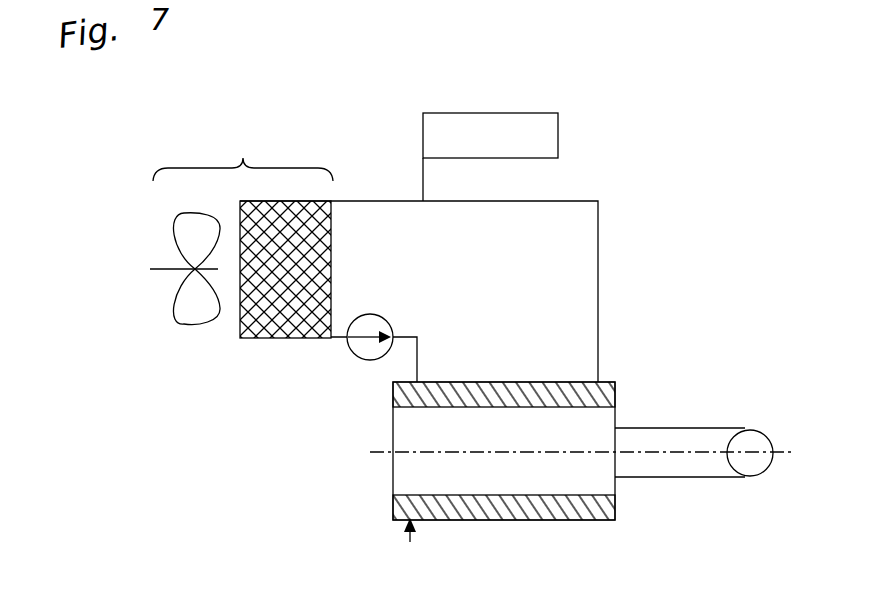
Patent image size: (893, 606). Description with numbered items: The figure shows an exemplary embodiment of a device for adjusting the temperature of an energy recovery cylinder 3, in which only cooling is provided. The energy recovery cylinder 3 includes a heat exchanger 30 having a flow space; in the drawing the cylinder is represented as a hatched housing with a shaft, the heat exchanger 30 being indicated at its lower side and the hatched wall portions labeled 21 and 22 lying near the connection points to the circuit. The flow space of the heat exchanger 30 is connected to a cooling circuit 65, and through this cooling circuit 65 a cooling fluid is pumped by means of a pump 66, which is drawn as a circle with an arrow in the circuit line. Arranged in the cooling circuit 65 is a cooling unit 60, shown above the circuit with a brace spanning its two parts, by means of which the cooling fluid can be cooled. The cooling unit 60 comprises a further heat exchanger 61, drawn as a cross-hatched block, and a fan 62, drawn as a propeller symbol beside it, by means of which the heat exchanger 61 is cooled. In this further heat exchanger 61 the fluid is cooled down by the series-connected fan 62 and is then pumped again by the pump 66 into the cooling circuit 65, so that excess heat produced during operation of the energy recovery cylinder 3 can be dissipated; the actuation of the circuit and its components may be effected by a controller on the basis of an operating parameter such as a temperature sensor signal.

The energy recovery cylinder 3 is at (492, 451).
The stator 21 is at (424, 376).
The rotor 22 is at (583, 380).
The heat exchanger 30 is at (497, 553).
The cooling unit 60 is at (243, 141).
The further heat exchanger 61 is at (279, 338).
The fan 62 is at (196, 323).
The cooling circuit 65 is at (490, 135).
The pump 66 is at (388, 313).